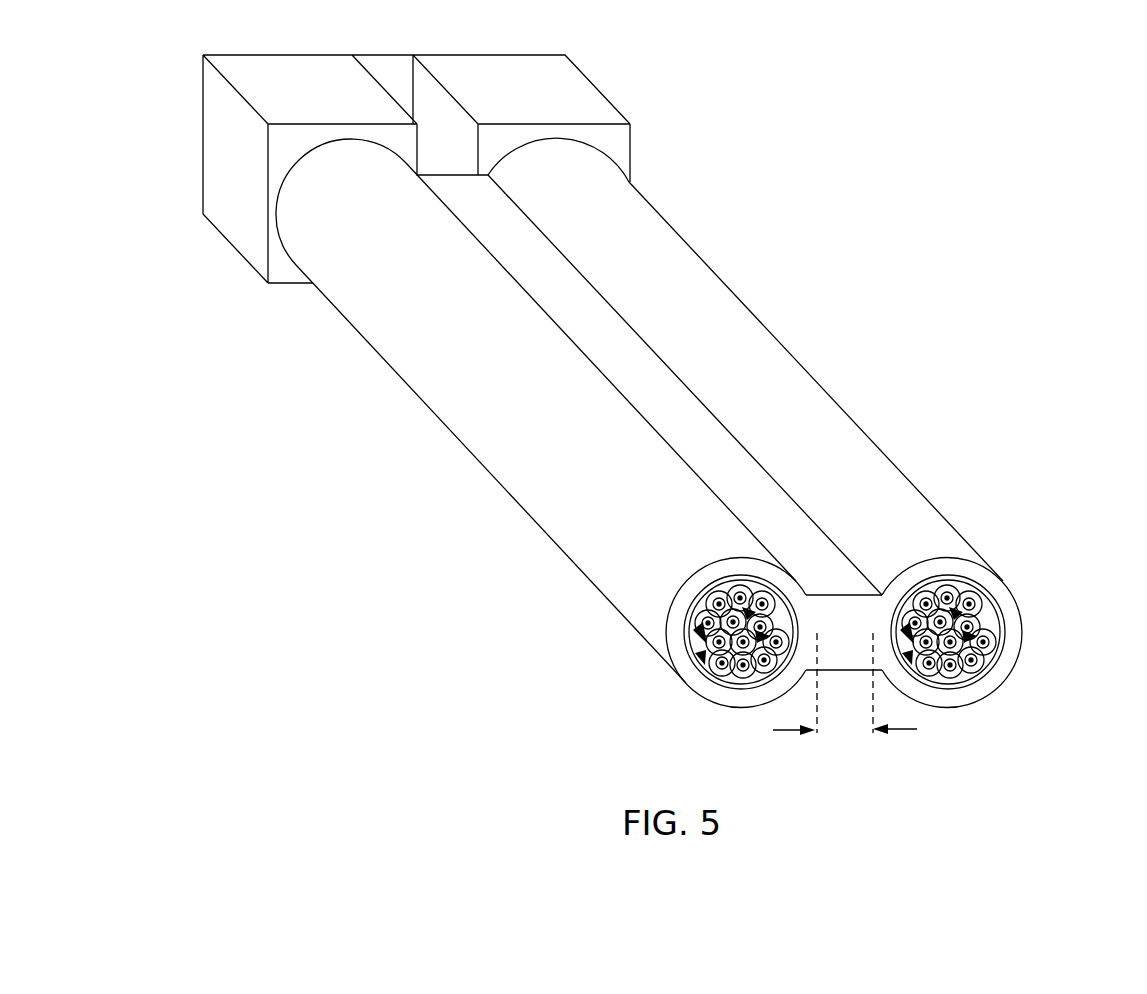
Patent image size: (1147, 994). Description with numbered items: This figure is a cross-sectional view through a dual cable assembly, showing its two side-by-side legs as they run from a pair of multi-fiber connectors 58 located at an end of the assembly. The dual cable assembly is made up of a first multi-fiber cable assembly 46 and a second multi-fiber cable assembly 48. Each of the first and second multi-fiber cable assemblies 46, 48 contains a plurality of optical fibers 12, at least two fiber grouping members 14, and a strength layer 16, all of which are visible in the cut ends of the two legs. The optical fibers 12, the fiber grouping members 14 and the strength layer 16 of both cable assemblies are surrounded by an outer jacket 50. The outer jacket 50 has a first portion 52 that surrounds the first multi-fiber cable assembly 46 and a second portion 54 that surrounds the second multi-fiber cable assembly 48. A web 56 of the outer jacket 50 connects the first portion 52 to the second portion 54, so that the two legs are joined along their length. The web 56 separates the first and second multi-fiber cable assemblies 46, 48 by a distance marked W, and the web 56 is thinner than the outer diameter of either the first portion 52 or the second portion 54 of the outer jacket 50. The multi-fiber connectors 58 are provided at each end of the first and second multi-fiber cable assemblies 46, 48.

The optical fibers 12 is at (737, 673).
The fiber grouping members 14 is at (700, 658).
The strength layer 16 is at (747, 688).
The first multi-fiber cable assembly 46 is at (475, 460).
The second multi-fiber cable assembly 48 is at (853, 418).
The outer jacket 50 is at (718, 459).
The first portion 52 is at (668, 635).
The second portion 54 is at (1017, 629).
The web 56 is at (857, 607).
The multi-fiber connectors 58 is at (303, 82).